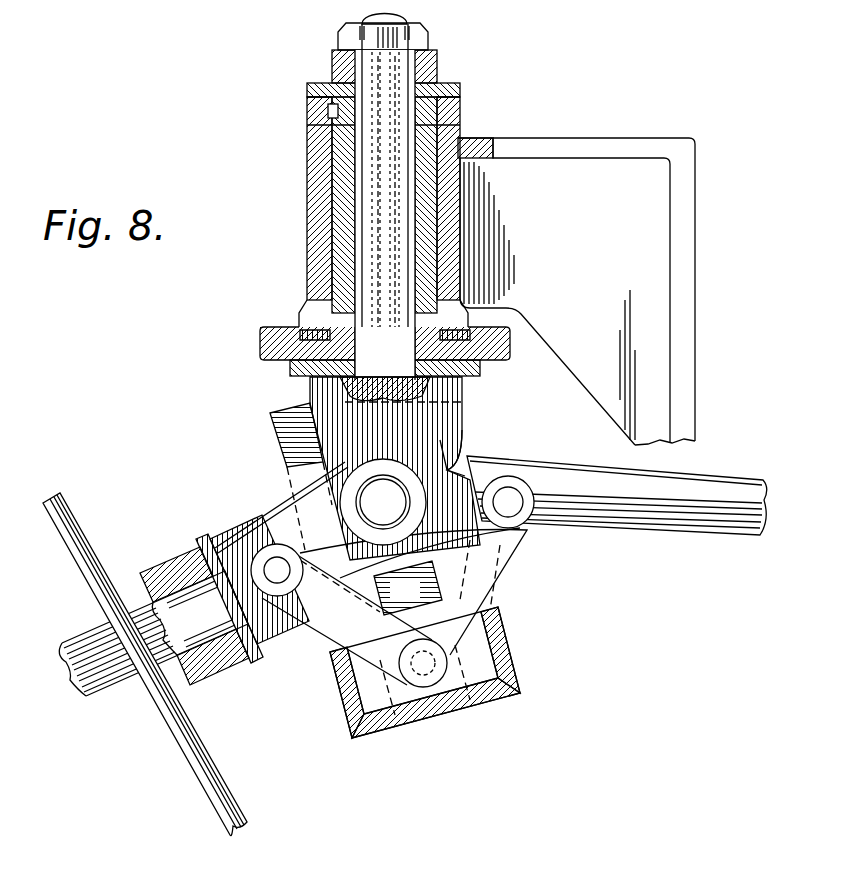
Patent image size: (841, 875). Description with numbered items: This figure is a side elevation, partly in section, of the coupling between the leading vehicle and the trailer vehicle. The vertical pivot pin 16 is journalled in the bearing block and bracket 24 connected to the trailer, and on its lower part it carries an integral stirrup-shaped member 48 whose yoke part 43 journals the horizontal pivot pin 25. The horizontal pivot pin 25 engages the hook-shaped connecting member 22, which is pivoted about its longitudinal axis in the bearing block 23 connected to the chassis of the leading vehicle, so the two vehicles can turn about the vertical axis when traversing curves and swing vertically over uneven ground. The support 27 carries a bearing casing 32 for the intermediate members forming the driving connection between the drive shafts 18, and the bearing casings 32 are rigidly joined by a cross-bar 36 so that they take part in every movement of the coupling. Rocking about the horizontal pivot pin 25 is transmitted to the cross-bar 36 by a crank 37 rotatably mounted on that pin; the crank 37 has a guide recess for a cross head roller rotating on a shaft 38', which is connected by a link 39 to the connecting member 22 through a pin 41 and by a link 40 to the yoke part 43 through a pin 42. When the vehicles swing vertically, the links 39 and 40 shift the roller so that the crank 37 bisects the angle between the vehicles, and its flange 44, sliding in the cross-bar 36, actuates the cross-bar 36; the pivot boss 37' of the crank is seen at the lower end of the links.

The vertical pivot pin 16 is at (375, 215).
The drive shaft 18 is at (262, 520).
The hook-shaped connecting member 22 is at (245, 545).
The bearing block 23 is at (210, 672).
The bearing block and bracket 24 is at (308, 150).
The horizontal pivot pin 25 is at (380, 485).
The support 27 is at (260, 345).
The bearing casing 32 is at (275, 415).
The cross-bar 36 is at (512, 655).
The crank 37 is at (408, 588).
The pivot boss 37' is at (403, 711).
The shaft 38' is at (436, 703).
The link 39 is at (304, 630).
The link 40 is at (505, 565).
The pin 41 is at (277, 544).
The pin 42 is at (510, 500).
The yoke part 43 is at (446, 428).
The flange 44 is at (485, 690).
The stirrup-shaped member 48 is at (453, 385).